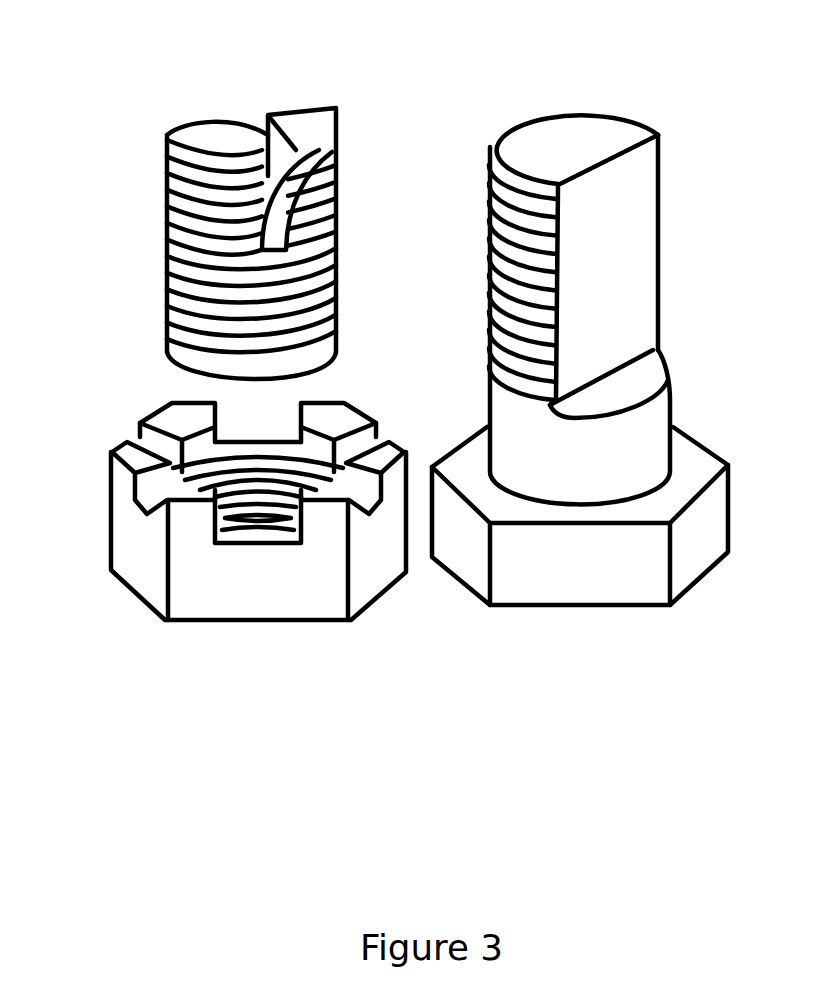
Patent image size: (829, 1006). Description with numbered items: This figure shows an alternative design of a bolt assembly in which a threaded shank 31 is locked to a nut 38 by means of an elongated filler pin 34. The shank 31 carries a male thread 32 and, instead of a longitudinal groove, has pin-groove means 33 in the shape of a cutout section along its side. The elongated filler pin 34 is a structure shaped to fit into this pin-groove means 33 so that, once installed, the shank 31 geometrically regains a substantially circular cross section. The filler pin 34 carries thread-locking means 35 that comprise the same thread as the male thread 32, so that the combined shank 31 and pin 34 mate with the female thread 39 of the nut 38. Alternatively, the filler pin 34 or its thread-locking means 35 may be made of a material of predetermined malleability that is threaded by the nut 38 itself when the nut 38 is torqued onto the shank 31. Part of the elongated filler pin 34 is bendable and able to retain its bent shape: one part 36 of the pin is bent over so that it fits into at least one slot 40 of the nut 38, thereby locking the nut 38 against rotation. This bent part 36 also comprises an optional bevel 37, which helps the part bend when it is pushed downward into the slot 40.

The shank 31 is at (650, 427).
The male thread 32 is at (487, 213).
The pin-groove means 33 is at (623, 263).
The elongated filler pin 34 is at (320, 353).
The thread-locking means 35 is at (205, 264).
The part of the elongated filler pin 36 is at (303, 225).
The bevel 37 is at (267, 137).
The nut 38 is at (297, 593).
The female thread 39 is at (252, 508).
The slot 40 is at (245, 422).